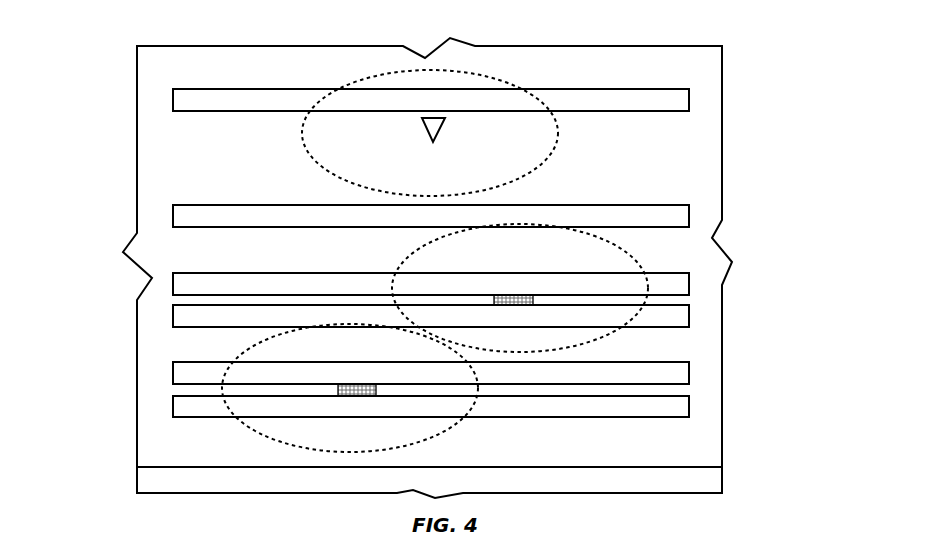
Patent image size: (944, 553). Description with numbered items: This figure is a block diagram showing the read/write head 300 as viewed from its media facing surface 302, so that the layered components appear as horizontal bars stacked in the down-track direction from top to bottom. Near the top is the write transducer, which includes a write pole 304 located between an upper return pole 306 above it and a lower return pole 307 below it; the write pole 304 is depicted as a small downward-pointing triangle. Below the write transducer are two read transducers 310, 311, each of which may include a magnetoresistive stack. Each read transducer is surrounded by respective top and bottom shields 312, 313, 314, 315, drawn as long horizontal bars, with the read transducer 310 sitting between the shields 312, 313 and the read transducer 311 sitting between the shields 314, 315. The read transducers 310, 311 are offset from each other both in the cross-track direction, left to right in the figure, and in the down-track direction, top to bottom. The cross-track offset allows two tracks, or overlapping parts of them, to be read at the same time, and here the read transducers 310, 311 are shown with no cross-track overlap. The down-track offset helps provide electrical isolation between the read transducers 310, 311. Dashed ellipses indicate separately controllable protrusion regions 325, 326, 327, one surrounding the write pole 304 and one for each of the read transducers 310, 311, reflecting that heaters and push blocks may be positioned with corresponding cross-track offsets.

The read/write head 300 is at (758, 74).
The media facing surface 302 is at (157, 59).
The write pole 304 is at (422, 124).
The upper return pole 306 is at (173, 95).
The lower return pole 307 is at (173, 215).
The read transducer 310 is at (514, 294).
The read transducer 311 is at (357, 384).
The shield 312 is at (173, 288).
The shield 313 is at (173, 315).
The shield 314 is at (173, 373).
The shield 315 is at (173, 407).
The protrusion region 325 is at (303, 143).
The protrusion region 326 is at (418, 250).
The protrusion region 327 is at (445, 432).